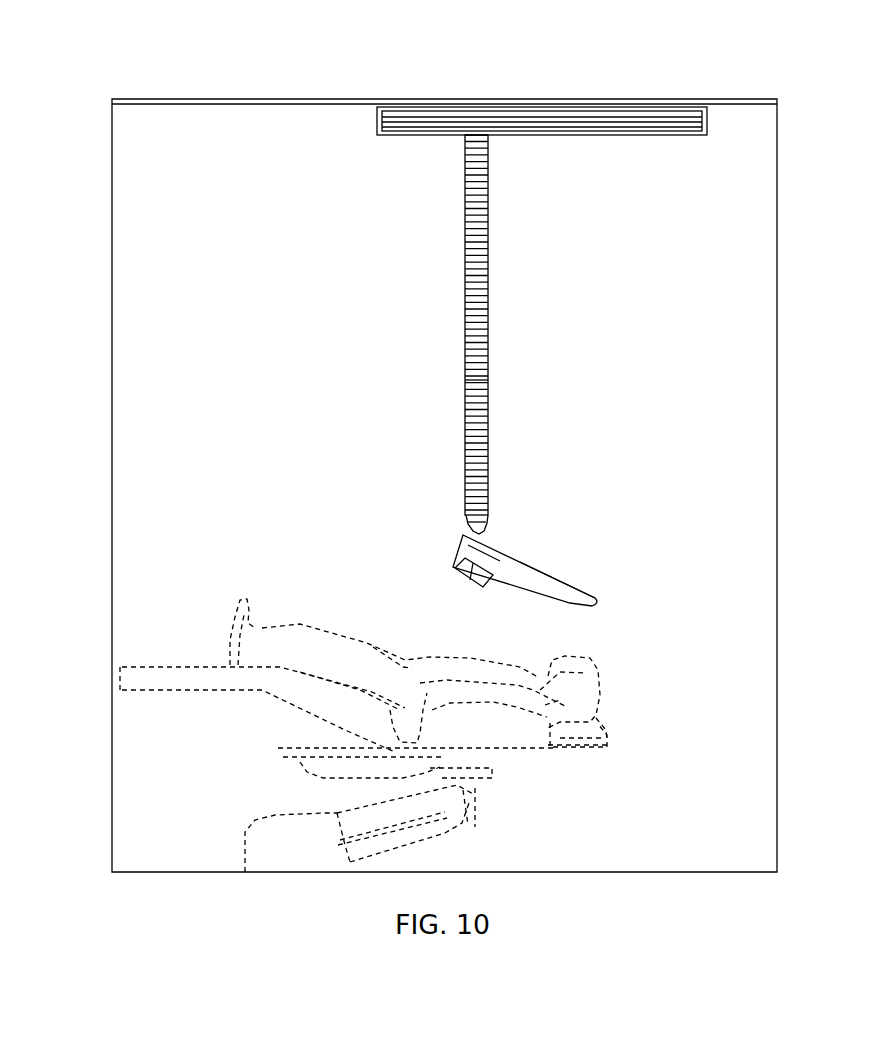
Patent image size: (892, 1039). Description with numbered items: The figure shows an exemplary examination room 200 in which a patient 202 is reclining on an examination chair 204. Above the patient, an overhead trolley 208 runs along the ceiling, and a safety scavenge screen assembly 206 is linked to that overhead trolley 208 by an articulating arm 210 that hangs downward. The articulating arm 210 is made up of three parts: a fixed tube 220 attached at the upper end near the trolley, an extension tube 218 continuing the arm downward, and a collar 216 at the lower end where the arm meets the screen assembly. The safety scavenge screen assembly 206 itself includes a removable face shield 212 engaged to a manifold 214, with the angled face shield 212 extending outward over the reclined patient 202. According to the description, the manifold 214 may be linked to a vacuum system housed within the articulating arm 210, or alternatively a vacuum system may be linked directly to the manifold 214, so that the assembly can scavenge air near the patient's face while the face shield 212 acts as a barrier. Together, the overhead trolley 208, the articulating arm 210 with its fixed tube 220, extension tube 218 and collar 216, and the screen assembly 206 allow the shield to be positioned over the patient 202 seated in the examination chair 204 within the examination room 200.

The examination room 200 is at (217, 42).
The patient 202 is at (265, 638).
The examination chair 204 is at (188, 698).
The safety scavenge screen assembly 206 is at (545, 545).
The overhead trolley 208 is at (366, 119).
The articulating arm 210 is at (452, 290).
The removable face shield 212 is at (578, 578).
The manifold 214 is at (440, 571).
The collar 216 is at (452, 519).
The extension tube 218 is at (498, 382).
The fixed tube 220 is at (498, 223).